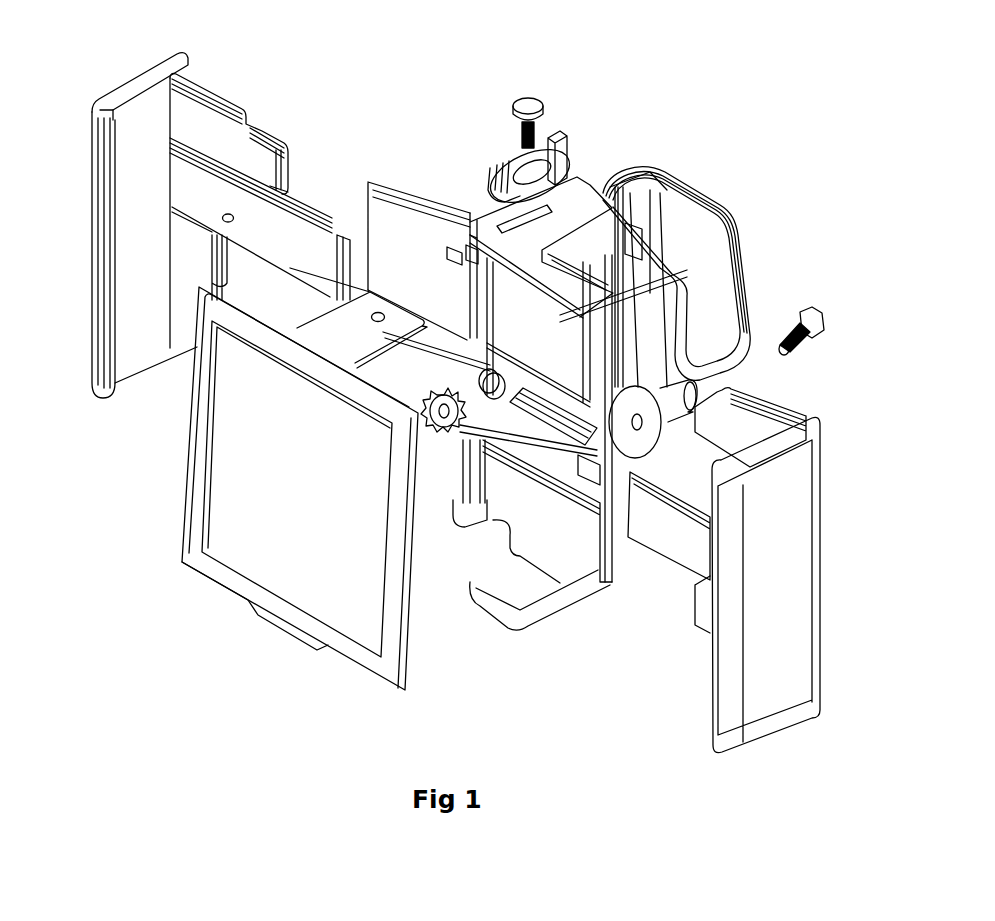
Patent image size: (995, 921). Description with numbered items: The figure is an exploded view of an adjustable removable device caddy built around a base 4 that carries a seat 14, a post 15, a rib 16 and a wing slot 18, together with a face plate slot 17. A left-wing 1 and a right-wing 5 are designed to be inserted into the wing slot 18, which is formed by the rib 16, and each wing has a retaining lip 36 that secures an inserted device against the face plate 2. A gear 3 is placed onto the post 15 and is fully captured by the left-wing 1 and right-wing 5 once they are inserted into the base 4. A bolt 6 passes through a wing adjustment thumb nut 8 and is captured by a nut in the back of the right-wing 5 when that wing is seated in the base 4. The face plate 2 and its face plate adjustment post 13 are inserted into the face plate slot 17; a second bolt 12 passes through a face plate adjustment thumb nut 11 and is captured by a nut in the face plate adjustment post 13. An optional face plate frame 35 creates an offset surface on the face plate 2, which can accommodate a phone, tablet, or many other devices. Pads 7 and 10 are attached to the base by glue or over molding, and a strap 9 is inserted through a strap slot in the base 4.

The left-wing 1 is at (117, 70).
The face plate 2 is at (183, 428).
The gear 3 is at (457, 520).
The base 4 is at (543, 382).
The right-wing 5 is at (821, 548).
The bolt 6 is at (828, 340).
The pad 7 is at (706, 392).
The wing adjustment thumb nut 8 is at (689, 379).
The strap 9 is at (687, 182).
The pad 10 is at (636, 171).
The face plate adjustment thumb nut 11 is at (566, 132).
The bolt 12 is at (543, 87).
The face plate adjustment post 13 is at (362, 272).
The seat 14 is at (512, 634).
The post 15 is at (473, 262).
The rib 16 is at (585, 470).
The face plate slot 17 is at (450, 246).
The wing slot 18 is at (617, 342).
The face plate frame 35 is at (243, 350).
The retaining lip 36 is at (107, 137).